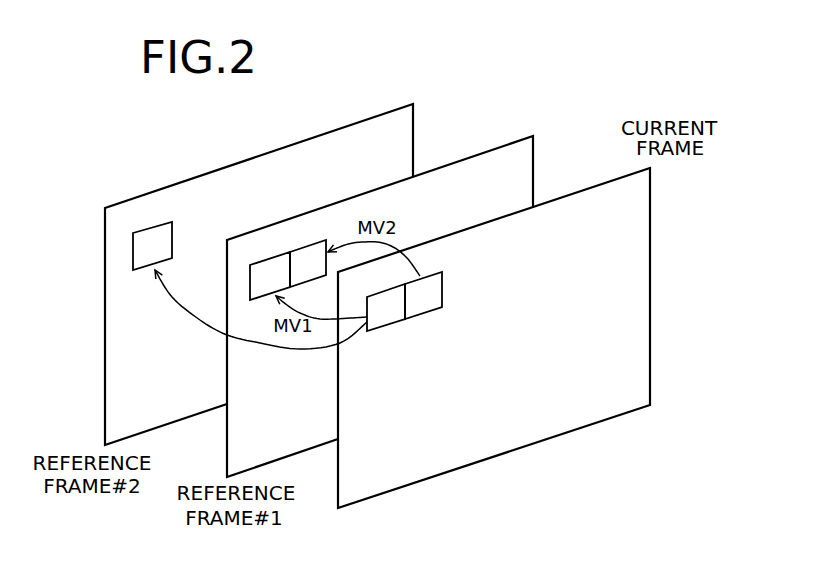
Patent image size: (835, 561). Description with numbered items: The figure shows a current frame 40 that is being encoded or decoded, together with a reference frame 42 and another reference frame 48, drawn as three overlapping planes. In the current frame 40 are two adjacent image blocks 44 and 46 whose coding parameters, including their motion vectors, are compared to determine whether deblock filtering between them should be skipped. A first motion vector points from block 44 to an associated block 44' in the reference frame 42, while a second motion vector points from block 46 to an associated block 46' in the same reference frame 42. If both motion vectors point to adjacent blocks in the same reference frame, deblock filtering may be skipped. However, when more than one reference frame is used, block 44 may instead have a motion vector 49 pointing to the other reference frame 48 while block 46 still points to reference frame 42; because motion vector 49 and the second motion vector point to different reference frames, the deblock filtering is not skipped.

The current frame 40 is at (593, 188).
The reference frame 42 is at (490, 150).
The reference frame 48 is at (367, 120).
The image block 44 is at (386, 307).
The image block 46 is at (423, 295).
The associated block 44' is at (211, 261).
The associated block 46' is at (308, 263).
The motion vector 49 is at (201, 324).